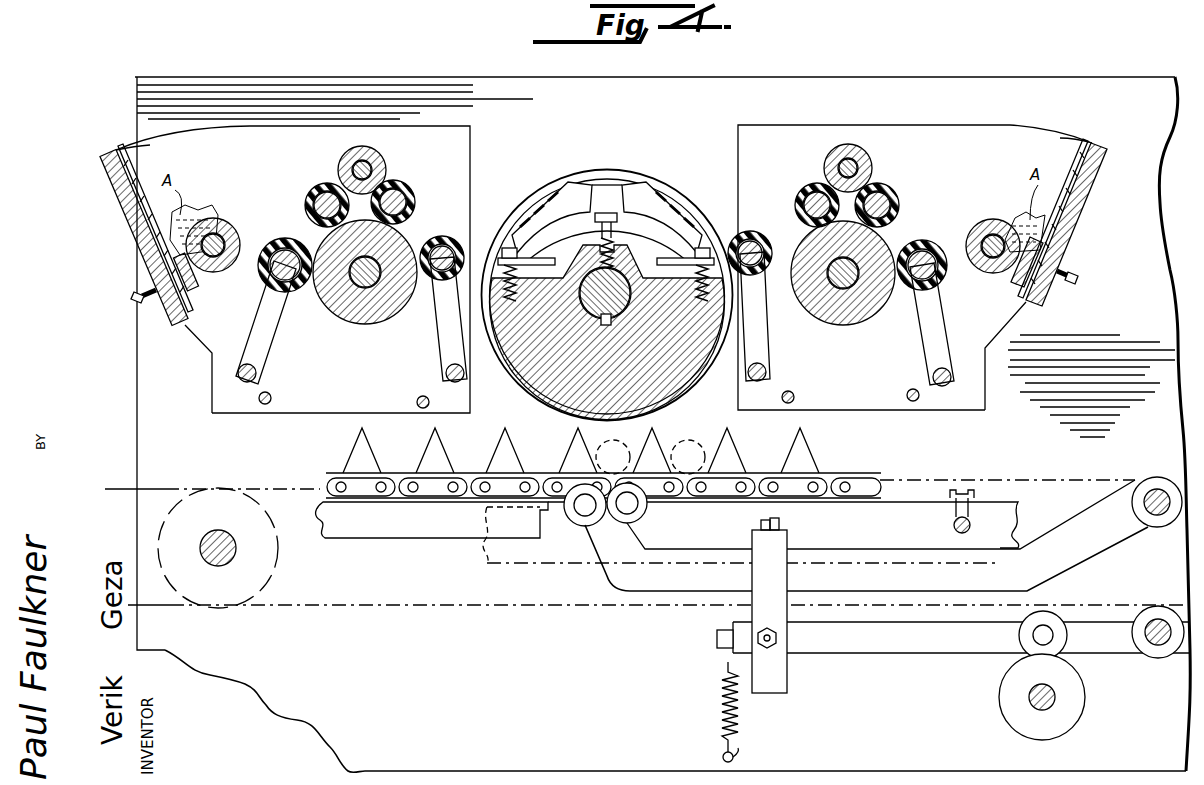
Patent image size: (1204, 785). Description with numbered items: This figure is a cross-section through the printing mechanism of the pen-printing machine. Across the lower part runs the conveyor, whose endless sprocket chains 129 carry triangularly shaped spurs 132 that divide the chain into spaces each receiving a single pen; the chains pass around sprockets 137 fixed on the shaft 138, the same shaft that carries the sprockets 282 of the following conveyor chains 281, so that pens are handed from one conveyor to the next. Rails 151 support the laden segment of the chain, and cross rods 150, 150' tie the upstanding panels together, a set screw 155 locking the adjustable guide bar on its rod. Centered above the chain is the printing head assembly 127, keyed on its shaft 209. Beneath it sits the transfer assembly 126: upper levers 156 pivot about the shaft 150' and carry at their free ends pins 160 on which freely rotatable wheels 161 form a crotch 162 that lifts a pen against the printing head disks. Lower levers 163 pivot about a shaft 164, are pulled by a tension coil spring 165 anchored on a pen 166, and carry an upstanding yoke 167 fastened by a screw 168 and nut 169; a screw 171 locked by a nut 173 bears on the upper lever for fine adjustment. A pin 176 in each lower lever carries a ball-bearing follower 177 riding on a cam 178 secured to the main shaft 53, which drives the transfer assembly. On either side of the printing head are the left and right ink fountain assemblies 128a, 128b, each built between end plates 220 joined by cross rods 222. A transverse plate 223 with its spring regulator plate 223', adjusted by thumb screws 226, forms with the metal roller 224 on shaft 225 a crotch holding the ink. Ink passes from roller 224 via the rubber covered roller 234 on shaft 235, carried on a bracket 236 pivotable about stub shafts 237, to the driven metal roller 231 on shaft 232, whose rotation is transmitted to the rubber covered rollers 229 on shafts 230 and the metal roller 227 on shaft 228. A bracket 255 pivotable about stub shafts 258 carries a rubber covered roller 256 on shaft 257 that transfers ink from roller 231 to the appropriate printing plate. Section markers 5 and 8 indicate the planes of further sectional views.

The section line 5 is at (155, 427).
The section line 8 is at (735, 150).
The main shaft 53 is at (1052, 708).
The transfer assembly 126 is at (528, 622).
The printing head assembly 127 is at (648, 153).
The left ink fountain assembly 128a is at (263, 143).
The right ink fountain assembly 128b is at (893, 102).
The endless sprocket chains 129 is at (262, 487).
The triangularly shaped spur 132 is at (428, 450).
The sprockets 137 is at (270, 548).
The shaft 138 is at (233, 546).
The cross rods 150 is at (936, 491).
The cross rod shaft 150' is at (1157, 522).
The rails 151 is at (432, 522).
The set screw 155 is at (970, 492).
The upper levers 156 is at (618, 570).
The pins 160 is at (632, 508).
The freely rotatable wheels 161 is at (598, 520).
The crotch 162 is at (760, 476).
The lower levers 163 is at (896, 642).
The shaft 164 is at (1157, 650).
The tension coil spring 165 is at (722, 692).
The pen 166 is at (740, 758).
The upstanding yoke 167 is at (775, 680).
The screw 168 is at (780, 637).
The nut 169 is at (770, 650).
The screw 171 is at (780, 521).
The nut 173 is at (790, 527).
The pin 176 is at (1035, 640).
The follower 177 is at (1025, 618).
The cam 178 is at (1012, 728).
The shaft 209 is at (610, 318).
The end plates 220 is at (205, 161).
The cross rods 222 is at (272, 397).
The transverse plate 223 is at (603, 234).
The spring regulator plate 223' is at (600, 225).
The metal roller 224 is at (232, 222).
The shaft 225 is at (172, 272).
The thumb screws 226 is at (135, 300).
The metal roller 227 is at (364, 146).
The shaft 228 is at (386, 166).
The rubber covered rollers 229 is at (318, 188).
The shafts 230 is at (306, 212).
The metal roller 231 is at (352, 320).
The shaft 232 is at (372, 320).
The rubber covered roller 234 is at (310, 318).
The shaft 235 is at (268, 285).
The bracket 236 is at (272, 329).
The stub shafts 237 is at (245, 363).
The bracket 255 is at (448, 348).
The rubber covered roller 256 is at (445, 236).
The shaft 257 is at (466, 248).
The stub shafts 258 is at (765, 370).
The endless sprocket chains 281 is at (118, 488).
The sprockets 282 is at (262, 560).